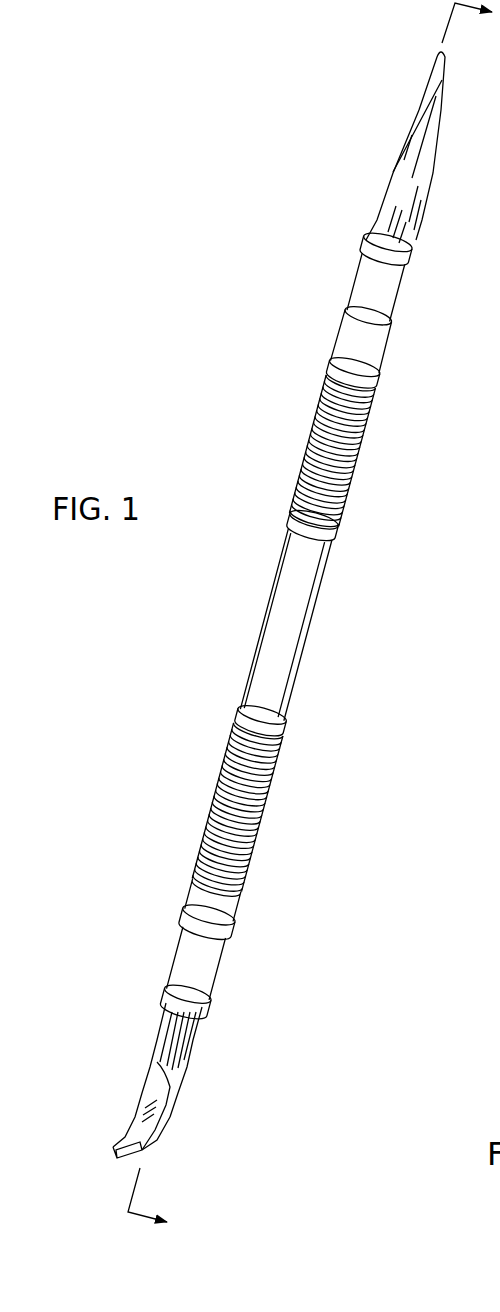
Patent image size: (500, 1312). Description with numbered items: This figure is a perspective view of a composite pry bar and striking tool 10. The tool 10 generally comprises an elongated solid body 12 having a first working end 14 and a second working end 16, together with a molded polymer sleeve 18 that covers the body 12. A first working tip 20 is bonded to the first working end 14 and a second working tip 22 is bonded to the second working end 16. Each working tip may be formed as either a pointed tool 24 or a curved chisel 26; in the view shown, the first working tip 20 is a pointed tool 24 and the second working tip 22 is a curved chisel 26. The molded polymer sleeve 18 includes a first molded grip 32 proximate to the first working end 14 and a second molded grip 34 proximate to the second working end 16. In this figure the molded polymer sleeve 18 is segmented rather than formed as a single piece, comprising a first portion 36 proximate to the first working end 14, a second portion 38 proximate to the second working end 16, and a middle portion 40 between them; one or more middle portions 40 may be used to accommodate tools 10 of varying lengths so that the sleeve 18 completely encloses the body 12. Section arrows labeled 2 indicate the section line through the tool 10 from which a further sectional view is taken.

The section line 2- 2 is at (310, 627).
The tool 10 is at (250, 257).
The elongated solid body 12 is at (317, 672).
The first working end 14 is at (393, 322).
The second working end 16 is at (171, 962).
The molded polymer sleeve 18 is at (308, 623).
The first working tip 20 is at (422, 146).
The second working tip 22 is at (158, 1080).
The pointed tool 24 is at (398, 79).
The curved chisel 26 is at (175, 1137).
The first molded grip 32 is at (307, 453).
The second molded grip 34 is at (248, 822).
The first portion 36 is at (354, 459).
The second portion 38 is at (211, 809).
The middle portion 40 is at (279, 623).